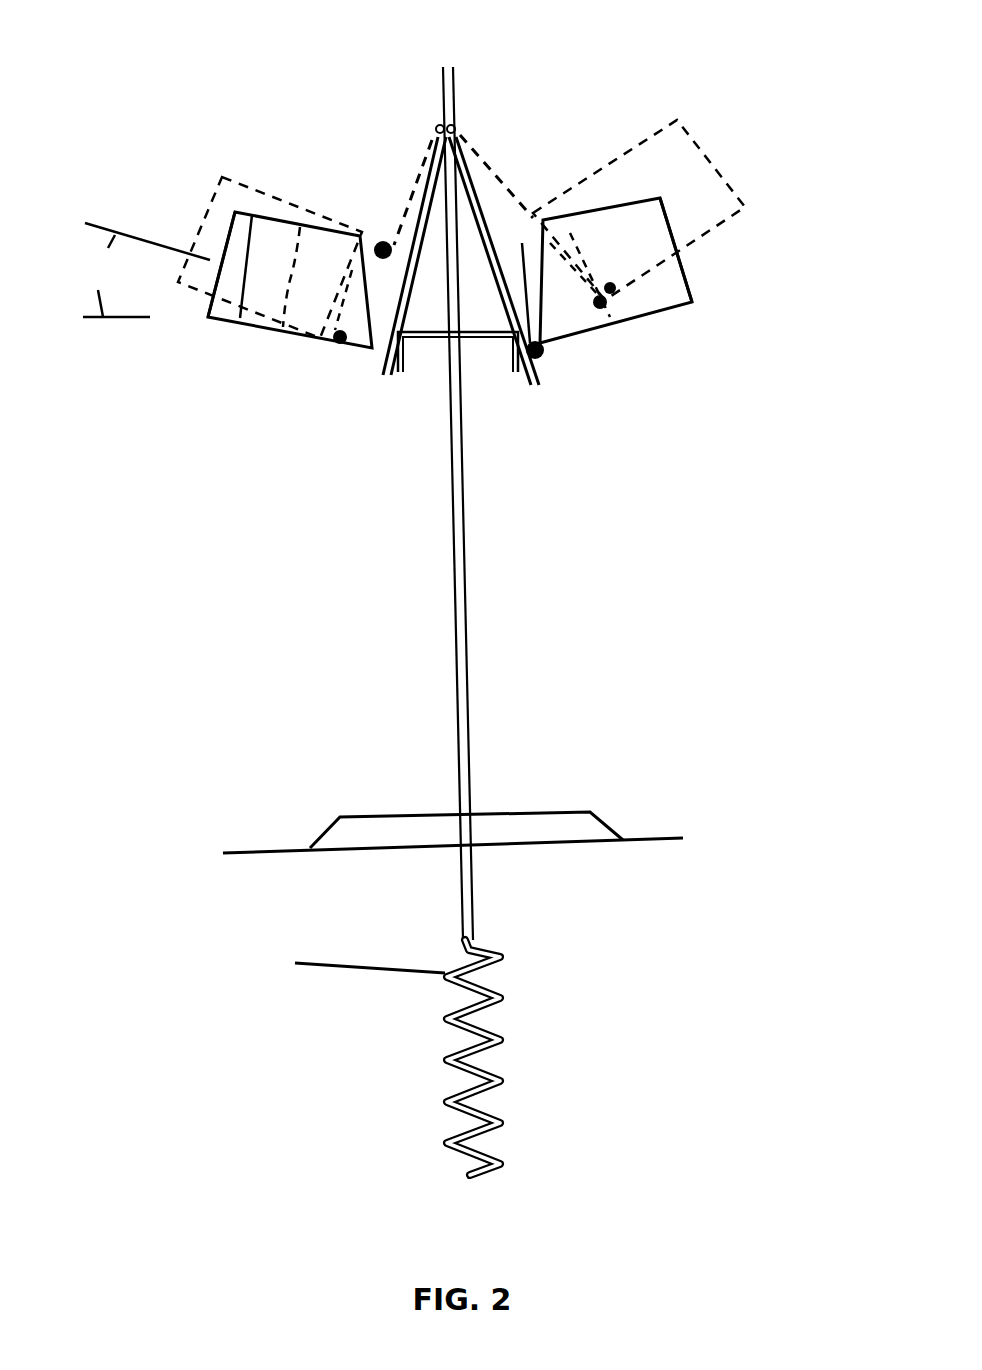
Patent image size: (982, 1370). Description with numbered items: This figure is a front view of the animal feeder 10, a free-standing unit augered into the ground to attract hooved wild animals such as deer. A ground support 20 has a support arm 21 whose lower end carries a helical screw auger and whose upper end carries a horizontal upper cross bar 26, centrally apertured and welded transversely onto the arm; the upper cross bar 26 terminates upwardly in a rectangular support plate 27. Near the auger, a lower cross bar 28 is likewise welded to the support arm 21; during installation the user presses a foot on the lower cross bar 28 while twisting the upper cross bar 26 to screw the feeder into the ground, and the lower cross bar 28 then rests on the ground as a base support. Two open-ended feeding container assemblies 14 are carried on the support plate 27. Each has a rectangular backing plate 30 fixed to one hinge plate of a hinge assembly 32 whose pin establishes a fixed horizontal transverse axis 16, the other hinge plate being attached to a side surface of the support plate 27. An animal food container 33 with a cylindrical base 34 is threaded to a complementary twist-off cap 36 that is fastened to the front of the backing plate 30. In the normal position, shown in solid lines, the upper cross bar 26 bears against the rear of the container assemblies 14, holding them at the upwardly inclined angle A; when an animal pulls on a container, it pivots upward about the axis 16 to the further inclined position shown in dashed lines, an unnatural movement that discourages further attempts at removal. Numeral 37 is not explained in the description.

The animal feeder 10 is at (168, 559).
The feeding container assembly 14 is at (318, 120).
The horizontal transverse axis 16 is at (257, 853).
The ground support 20 is at (445, 592).
The support arm 21 is at (468, 655).
The upper cross bar 26 is at (470, 340).
The support plate 27 is at (430, 340).
The lower cross bar 28 is at (533, 812).
The backing plate 30 is at (407, 202).
The hinge assembly 32 is at (445, 82).
The animal food container 33 is at (650, 318).
The cylindrical base 34 is at (225, 325).
The twist-off cap 36 is at (541, 344).
The panel 37 is at (302, 312).
The inclined angle A is at (146, 270).